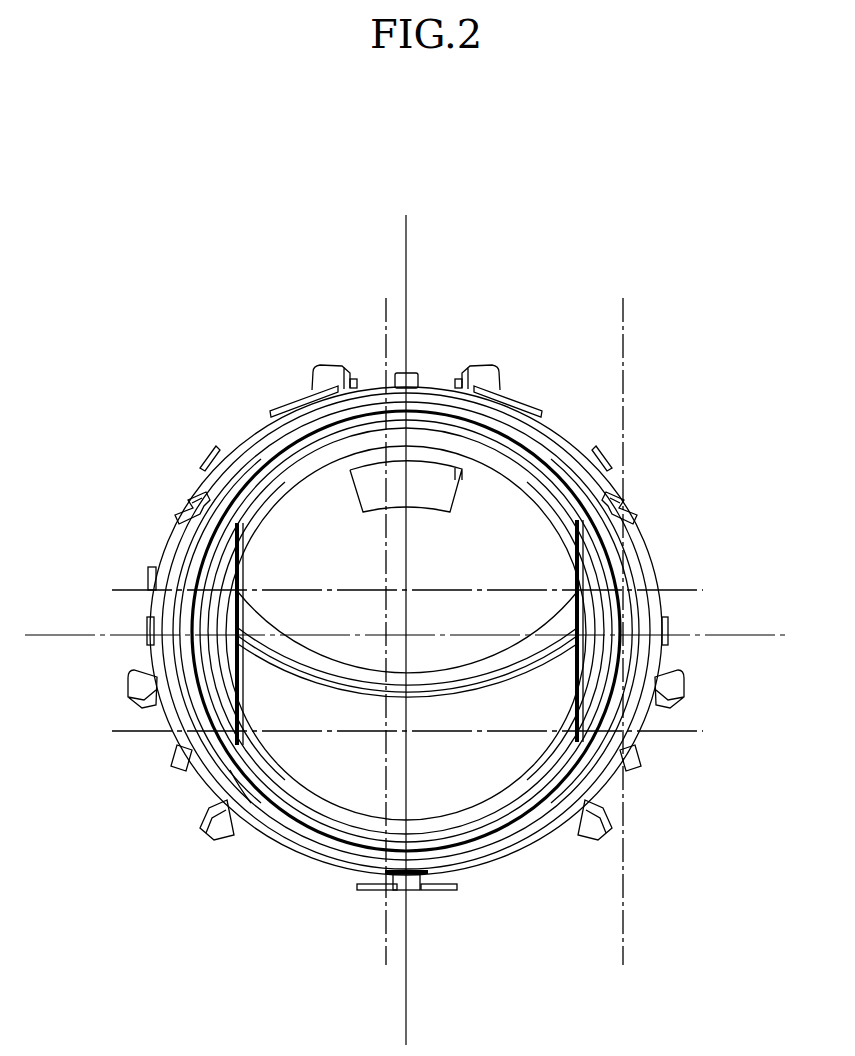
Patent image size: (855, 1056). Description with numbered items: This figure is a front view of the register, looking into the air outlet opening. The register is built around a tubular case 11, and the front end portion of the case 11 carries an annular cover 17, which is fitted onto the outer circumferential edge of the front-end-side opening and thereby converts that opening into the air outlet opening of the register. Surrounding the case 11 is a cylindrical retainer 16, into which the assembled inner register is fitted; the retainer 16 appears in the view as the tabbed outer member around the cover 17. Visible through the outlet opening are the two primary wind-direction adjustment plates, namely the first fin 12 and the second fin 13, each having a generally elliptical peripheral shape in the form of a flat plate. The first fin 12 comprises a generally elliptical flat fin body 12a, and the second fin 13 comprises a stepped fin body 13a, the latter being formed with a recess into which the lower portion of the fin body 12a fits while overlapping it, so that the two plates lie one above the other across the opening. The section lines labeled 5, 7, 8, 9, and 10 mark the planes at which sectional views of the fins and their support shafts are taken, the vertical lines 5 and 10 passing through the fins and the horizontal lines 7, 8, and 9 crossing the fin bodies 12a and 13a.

The case 11 is at (336, 822).
The first fin 12 is at (522, 497).
The fin body 12a is at (462, 578).
The second fin 13 is at (472, 808).
The stepped fin body 13a is at (464, 763).
The cylindrical retainer 16 is at (492, 362).
The annular cover 17 is at (249, 438).
The section line 5- 5 is at (376, 297).
The section line 7- 7 is at (109, 604).
The section line 8- 8 is at (76, 648).
The section line 9- 9 is at (109, 745).
The section line 10- 10 is at (633, 297).